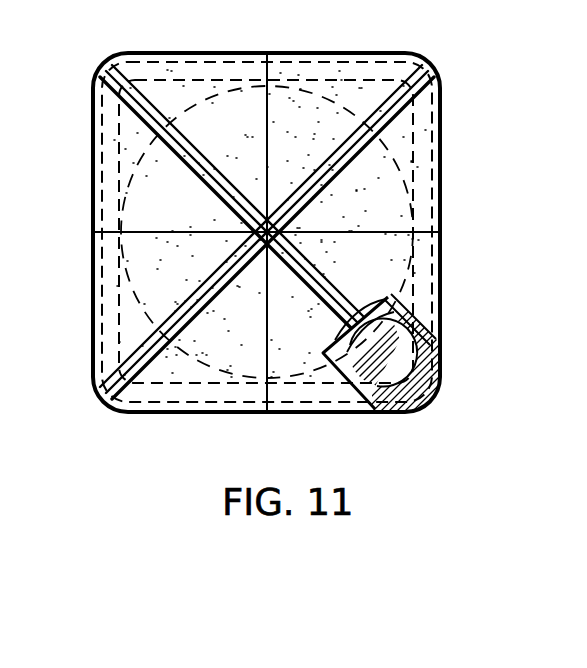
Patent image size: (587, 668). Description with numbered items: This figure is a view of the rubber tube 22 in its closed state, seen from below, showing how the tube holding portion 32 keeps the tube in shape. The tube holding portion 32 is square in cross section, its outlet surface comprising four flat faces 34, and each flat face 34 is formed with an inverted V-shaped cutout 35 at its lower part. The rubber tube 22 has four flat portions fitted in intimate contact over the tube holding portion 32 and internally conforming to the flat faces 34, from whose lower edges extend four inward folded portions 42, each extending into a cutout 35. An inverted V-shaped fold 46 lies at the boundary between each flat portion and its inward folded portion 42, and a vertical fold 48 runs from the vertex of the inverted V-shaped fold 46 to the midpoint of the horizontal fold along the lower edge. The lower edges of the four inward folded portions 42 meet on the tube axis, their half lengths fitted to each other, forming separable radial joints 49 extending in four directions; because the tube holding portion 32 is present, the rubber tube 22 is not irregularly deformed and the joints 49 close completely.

The rubber tube 22 is at (444, 113).
The inward folded portion 42 is at (444, 152).
The flat face 34 is at (450, 184).
The vertical fold 48 is at (263, 112).
The separable radial joint 49 is at (330, 160).
The tube holding portion 32 is at (410, 414).
The inverted V-shaped fold 46 is at (444, 342).
The inverted V-shaped cutout 35 is at (376, 382).